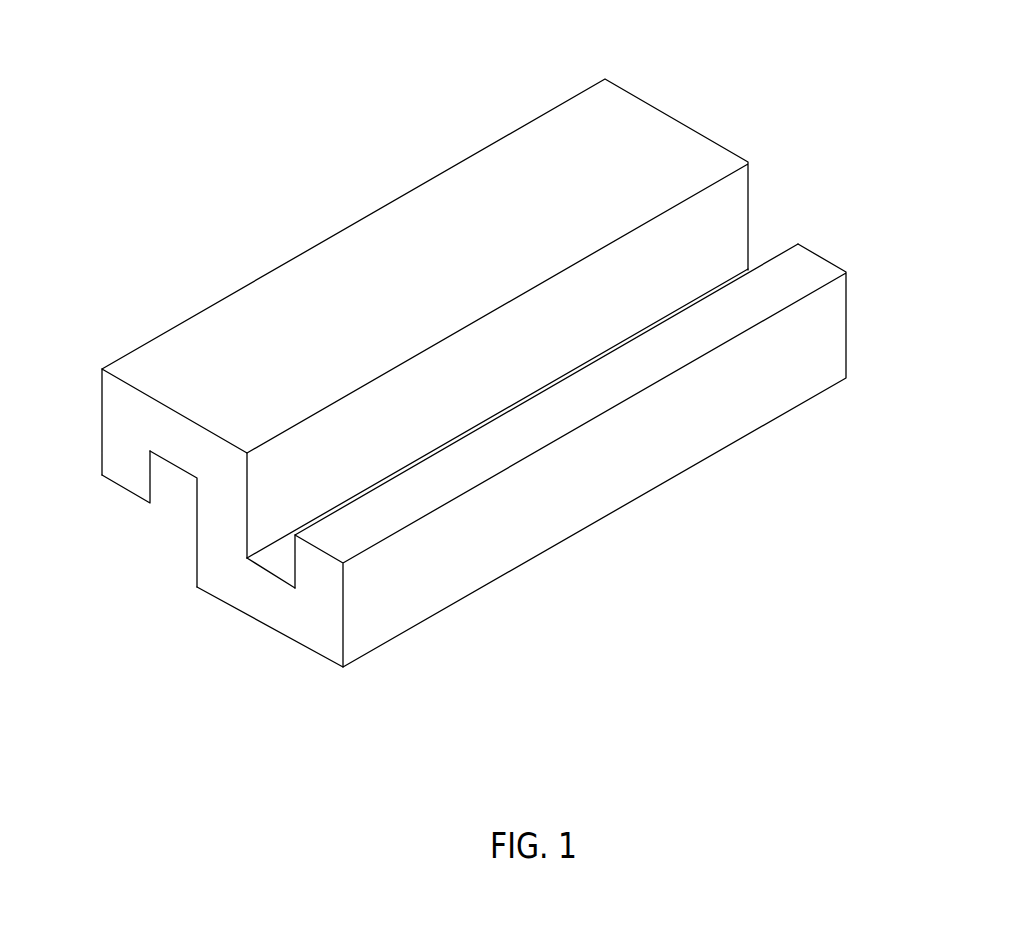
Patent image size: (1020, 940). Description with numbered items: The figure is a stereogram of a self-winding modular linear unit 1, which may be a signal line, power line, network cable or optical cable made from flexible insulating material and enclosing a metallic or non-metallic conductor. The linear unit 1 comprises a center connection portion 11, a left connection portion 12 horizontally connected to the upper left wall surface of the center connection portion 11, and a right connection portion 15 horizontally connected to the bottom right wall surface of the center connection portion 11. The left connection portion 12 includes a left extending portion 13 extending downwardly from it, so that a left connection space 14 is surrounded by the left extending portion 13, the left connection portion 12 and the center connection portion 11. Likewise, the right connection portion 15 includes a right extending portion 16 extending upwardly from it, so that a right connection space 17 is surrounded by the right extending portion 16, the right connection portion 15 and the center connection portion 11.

The linear unit 1 is at (470, 66).
The center connection portion 11 is at (223, 528).
The left connection portion 12 is at (178, 438).
The left extending portion 13 is at (128, 465).
The left connection space 14 is at (173, 517).
The right connection portion 15 is at (272, 600).
The right extending portion 16 is at (322, 572).
The right connection space 17 is at (272, 520).